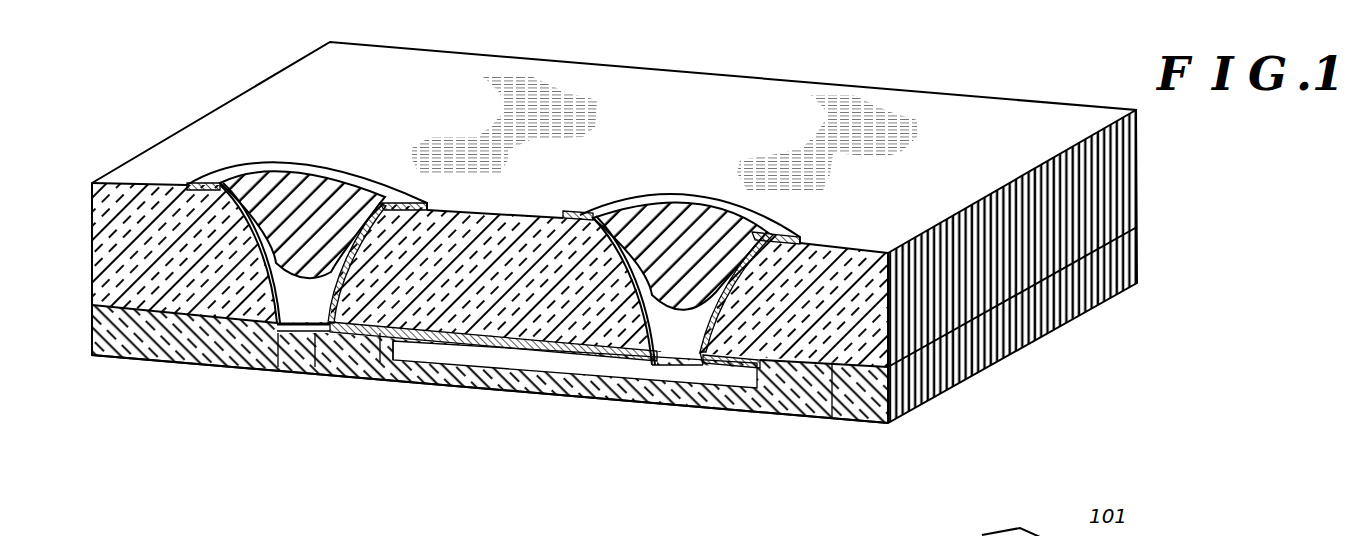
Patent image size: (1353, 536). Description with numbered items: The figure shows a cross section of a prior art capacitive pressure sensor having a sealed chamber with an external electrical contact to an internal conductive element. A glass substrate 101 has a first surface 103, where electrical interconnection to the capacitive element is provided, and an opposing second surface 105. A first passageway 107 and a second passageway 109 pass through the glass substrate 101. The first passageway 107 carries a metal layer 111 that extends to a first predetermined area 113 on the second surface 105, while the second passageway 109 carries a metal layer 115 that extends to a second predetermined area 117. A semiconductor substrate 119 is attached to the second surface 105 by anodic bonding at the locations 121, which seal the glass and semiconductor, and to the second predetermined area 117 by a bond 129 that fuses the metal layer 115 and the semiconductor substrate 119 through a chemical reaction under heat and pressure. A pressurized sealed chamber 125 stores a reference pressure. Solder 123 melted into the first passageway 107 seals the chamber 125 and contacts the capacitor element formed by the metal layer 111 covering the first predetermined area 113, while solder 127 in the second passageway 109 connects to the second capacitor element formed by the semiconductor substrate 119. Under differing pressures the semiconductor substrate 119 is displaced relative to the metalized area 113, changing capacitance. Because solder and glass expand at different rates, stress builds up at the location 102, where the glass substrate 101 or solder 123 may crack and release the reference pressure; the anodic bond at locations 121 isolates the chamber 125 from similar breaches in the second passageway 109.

The glass substrate 101 is at (190, 127).
The location of stress 102 is at (636, 284).
The first surface 103 is at (945, 108).
The opposing second surface 105 is at (390, 343).
The first passageway 107 is at (670, 334).
The second passageway 109 is at (290, 297).
The metal layer 111 is at (690, 343).
The first predetermined area 113 is at (530, 343).
The metal layer 115 is at (322, 317).
The second predetermined area 117 is at (383, 288).
The semiconductor substrate 119 is at (470, 377).
The anodic bond locations 121 is at (108, 302).
The solder 123 is at (663, 225).
The sealed chamber 125 is at (603, 363).
The solder 127 is at (298, 190).
The bond 129 is at (280, 323).